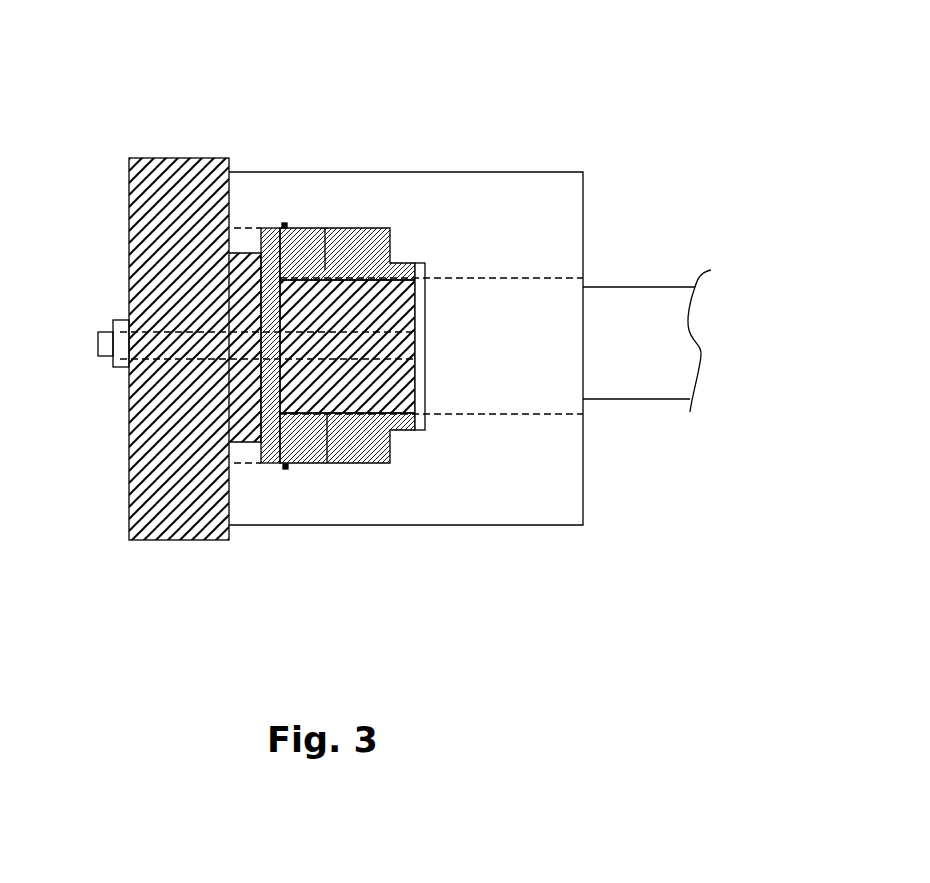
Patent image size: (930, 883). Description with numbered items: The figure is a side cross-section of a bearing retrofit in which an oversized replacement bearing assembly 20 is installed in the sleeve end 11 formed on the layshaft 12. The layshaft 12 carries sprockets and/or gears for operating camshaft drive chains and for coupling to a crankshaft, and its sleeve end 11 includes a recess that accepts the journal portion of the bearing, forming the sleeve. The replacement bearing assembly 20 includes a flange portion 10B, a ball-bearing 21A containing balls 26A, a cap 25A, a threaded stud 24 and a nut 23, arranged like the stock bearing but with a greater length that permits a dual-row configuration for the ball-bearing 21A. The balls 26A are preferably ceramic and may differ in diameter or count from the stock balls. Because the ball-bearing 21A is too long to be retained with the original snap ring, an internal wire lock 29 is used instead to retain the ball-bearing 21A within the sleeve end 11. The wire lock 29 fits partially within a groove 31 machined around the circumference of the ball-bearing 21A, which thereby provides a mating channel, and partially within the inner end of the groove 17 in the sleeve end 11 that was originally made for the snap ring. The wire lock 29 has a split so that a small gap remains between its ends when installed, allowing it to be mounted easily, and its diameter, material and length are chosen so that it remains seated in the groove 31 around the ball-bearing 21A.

The replacement bearing assembly 20 is at (188, 117).
The flange portion 10B is at (128, 185).
The sleeve end 11 is at (415, 172).
The groove 31 is at (265, 228).
The groove 17 is at (285, 226).
The ball-bearing 21A is at (367, 228).
The cap 25A is at (421, 263).
The balls 26A is at (295, 430).
The internal wire lock 29 is at (288, 467).
The layshaft 12 is at (667, 312).
The nut 23 is at (113, 362).
The threaded stud 24 is at (98, 345).